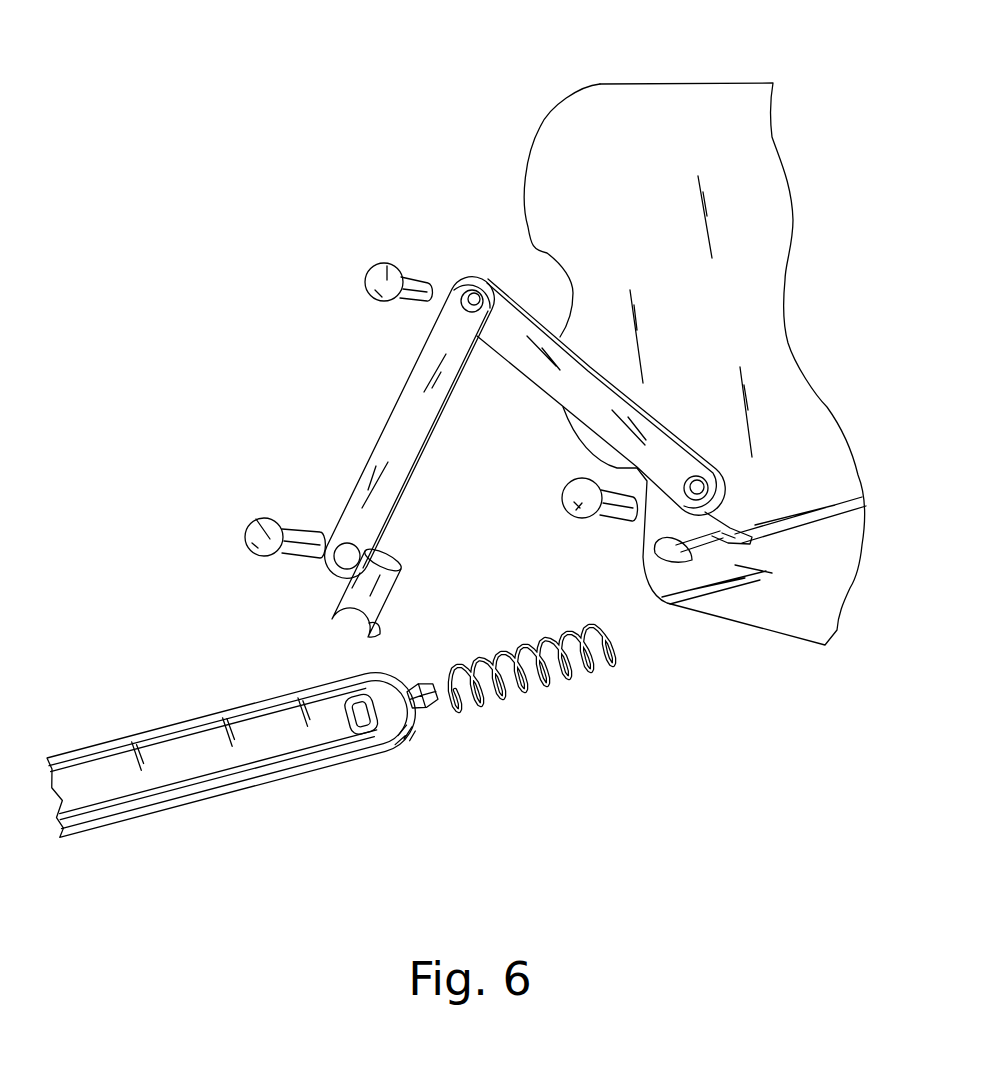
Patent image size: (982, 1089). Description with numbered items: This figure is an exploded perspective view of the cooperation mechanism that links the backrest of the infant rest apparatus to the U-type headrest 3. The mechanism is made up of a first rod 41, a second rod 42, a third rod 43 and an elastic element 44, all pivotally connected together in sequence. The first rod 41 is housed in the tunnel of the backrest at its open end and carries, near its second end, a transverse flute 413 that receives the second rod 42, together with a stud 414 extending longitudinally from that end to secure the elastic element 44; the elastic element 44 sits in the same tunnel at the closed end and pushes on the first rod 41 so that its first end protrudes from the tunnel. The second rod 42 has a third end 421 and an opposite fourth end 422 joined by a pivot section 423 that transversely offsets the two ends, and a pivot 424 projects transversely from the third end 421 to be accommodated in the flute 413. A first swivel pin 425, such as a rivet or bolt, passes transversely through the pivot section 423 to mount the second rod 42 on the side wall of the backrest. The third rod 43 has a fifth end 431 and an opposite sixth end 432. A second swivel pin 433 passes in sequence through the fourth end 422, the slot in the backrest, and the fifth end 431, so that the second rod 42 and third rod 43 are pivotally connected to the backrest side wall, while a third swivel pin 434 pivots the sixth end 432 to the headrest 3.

The headrest 3 is at (607, 118).
The first rod 41 is at (177, 777).
The transverse flute 413 is at (367, 722).
The stud 414 is at (433, 703).
The second rod 42 is at (417, 410).
The third end 421 is at (340, 603).
The fourth end 422 is at (460, 325).
The pivot section 423 is at (387, 560).
The pivot 424 is at (373, 630).
The first swivel pin 425 is at (258, 517).
The third rod 43 is at (584, 378).
The fifth end 431 is at (508, 307).
The sixth end 432 is at (683, 470).
The second swivel pin 433 is at (386, 270).
The third swivel pin 434 is at (578, 503).
The elastic element 44 is at (553, 680).